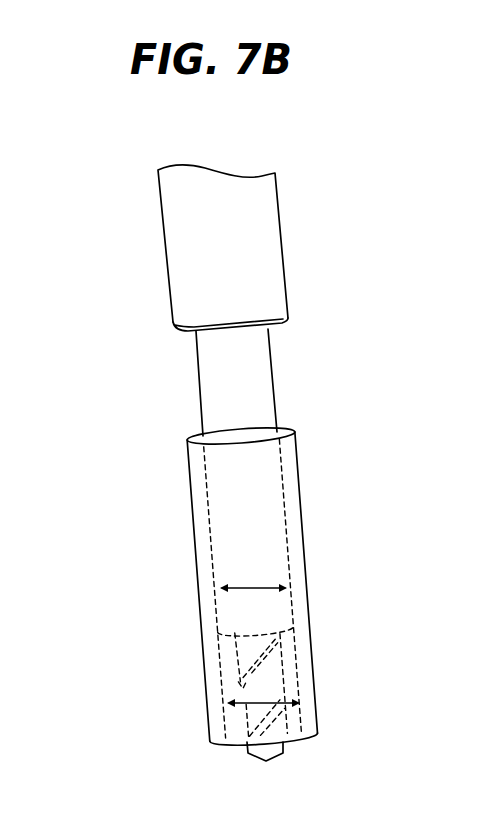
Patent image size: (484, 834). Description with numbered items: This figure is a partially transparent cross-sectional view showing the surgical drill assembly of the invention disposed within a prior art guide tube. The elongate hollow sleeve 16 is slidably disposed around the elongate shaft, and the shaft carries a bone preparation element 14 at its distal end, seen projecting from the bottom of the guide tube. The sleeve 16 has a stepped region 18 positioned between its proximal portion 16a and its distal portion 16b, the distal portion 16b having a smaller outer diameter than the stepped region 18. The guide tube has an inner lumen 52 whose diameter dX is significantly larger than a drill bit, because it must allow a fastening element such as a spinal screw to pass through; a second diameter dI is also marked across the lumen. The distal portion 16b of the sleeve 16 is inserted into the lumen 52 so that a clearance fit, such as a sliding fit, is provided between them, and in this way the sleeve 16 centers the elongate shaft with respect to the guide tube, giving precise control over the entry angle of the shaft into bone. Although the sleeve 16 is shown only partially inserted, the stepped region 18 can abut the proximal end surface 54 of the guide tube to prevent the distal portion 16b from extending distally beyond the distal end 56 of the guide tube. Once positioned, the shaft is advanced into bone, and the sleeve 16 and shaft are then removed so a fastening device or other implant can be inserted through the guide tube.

The hollow sleeve 16 is at (135, 262).
The proximal portion 16a is at (267, 252).
The distal portion 16b is at (260, 357).
The stepped region 18 is at (187, 334).
The inner lumen 52 is at (283, 421).
The proximal end surface 54 is at (197, 435).
The distal end 56 is at (210, 744).
The bone preparation element 14 is at (283, 753).
The diameter dI is at (257, 588).
The diameter dx dX is at (263, 703).